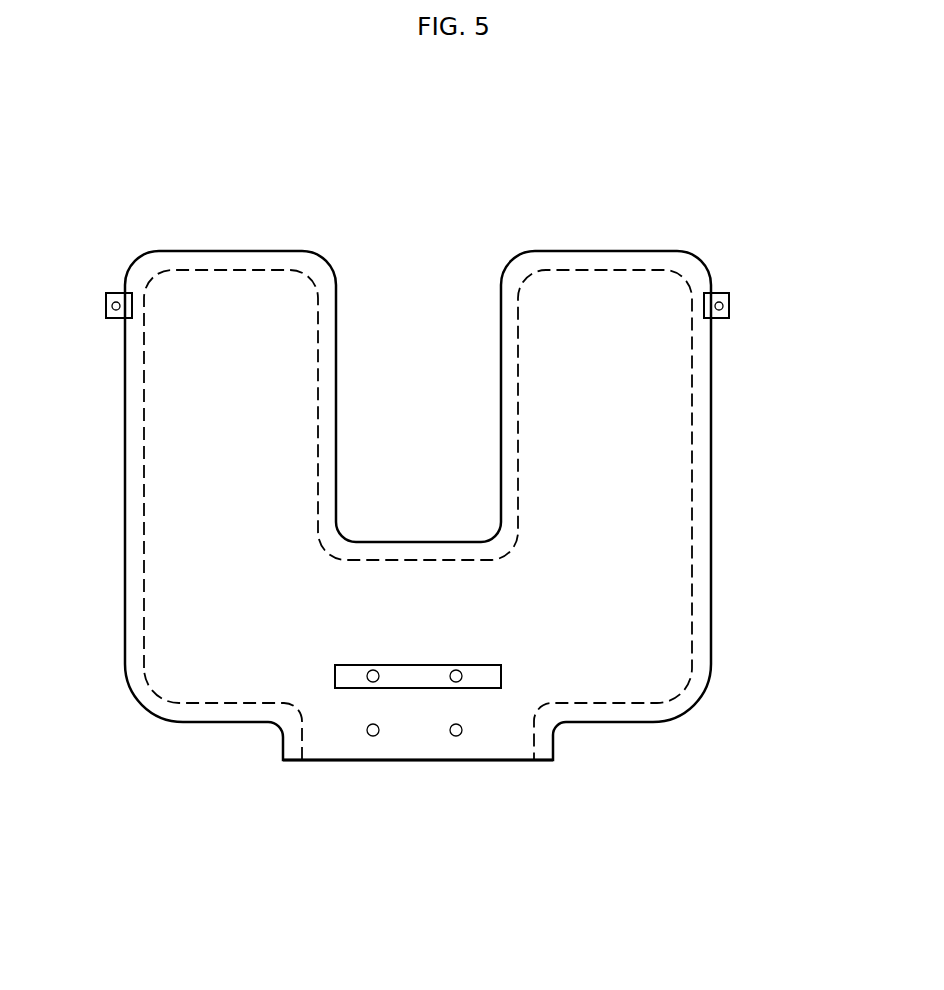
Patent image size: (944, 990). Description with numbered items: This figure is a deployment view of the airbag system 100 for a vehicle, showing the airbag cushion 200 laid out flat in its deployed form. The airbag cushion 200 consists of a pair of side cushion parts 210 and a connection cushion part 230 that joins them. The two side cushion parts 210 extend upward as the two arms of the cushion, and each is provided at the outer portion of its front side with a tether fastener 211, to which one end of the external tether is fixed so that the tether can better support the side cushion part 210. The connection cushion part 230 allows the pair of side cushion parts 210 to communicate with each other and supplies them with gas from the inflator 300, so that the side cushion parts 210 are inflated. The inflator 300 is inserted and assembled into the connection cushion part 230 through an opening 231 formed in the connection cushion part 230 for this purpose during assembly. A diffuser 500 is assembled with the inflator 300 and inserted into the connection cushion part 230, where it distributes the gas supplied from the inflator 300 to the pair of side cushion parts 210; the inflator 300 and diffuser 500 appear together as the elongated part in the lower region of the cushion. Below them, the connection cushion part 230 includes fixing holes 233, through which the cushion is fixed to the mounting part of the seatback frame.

The airbag system 100 is at (137, 119).
The airbag cushion 200 is at (803, 478).
The side cushion parts 210 is at (190, 378).
The tether fastener 211 is at (108, 294).
The connection cushion part 230 is at (395, 615).
The opening 231 is at (332, 762).
The fixing holes 233 is at (456, 737).
The inflator 300 is at (591, 657).
The diffuser 500 is at (488, 676).